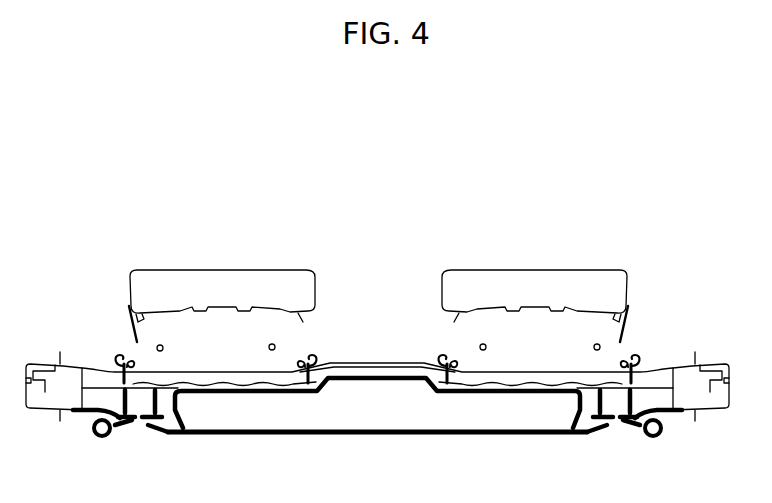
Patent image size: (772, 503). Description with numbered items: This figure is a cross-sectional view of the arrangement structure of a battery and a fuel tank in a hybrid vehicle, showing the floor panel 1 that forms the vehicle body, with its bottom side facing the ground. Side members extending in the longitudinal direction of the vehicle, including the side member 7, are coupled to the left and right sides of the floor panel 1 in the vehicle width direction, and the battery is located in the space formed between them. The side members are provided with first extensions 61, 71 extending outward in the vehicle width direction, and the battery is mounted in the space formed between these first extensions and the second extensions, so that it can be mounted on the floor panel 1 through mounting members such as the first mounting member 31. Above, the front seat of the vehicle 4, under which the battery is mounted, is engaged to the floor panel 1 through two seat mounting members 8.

The floor panel 1 is at (653, 388).
The front seat of the vehicle 4 is at (291, 273).
The side member 7 is at (460, 435).
The seat mounting member 8 is at (255, 372).
The first mounting member 31 is at (407, 435).
The first extension 61 is at (160, 418).
The first extension 71 is at (640, 403).